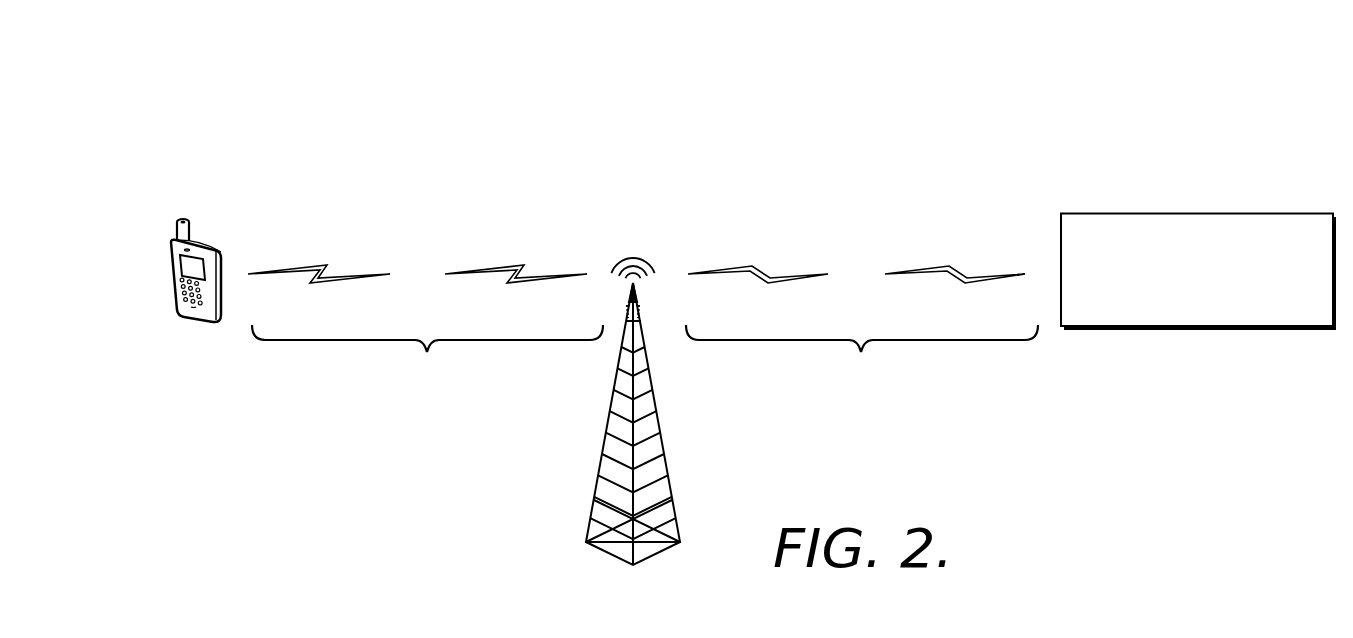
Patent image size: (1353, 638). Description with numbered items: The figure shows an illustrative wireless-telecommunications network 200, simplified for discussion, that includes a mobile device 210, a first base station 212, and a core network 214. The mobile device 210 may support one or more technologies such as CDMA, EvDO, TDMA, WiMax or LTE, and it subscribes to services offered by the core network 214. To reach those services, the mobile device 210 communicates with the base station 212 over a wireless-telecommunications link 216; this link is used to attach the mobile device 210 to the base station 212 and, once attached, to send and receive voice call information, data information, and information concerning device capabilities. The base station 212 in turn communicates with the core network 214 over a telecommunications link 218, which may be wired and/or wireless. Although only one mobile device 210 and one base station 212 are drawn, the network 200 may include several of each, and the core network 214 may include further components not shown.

The wireless-telecommunications network 200 is at (256, 102).
The mobile device 210 is at (172, 288).
The first base station 212 is at (596, 462).
The core network 214 is at (1196, 213).
The wireless-telecommunications link 216 is at (425, 324).
The telecommunications link 218 is at (862, 324).